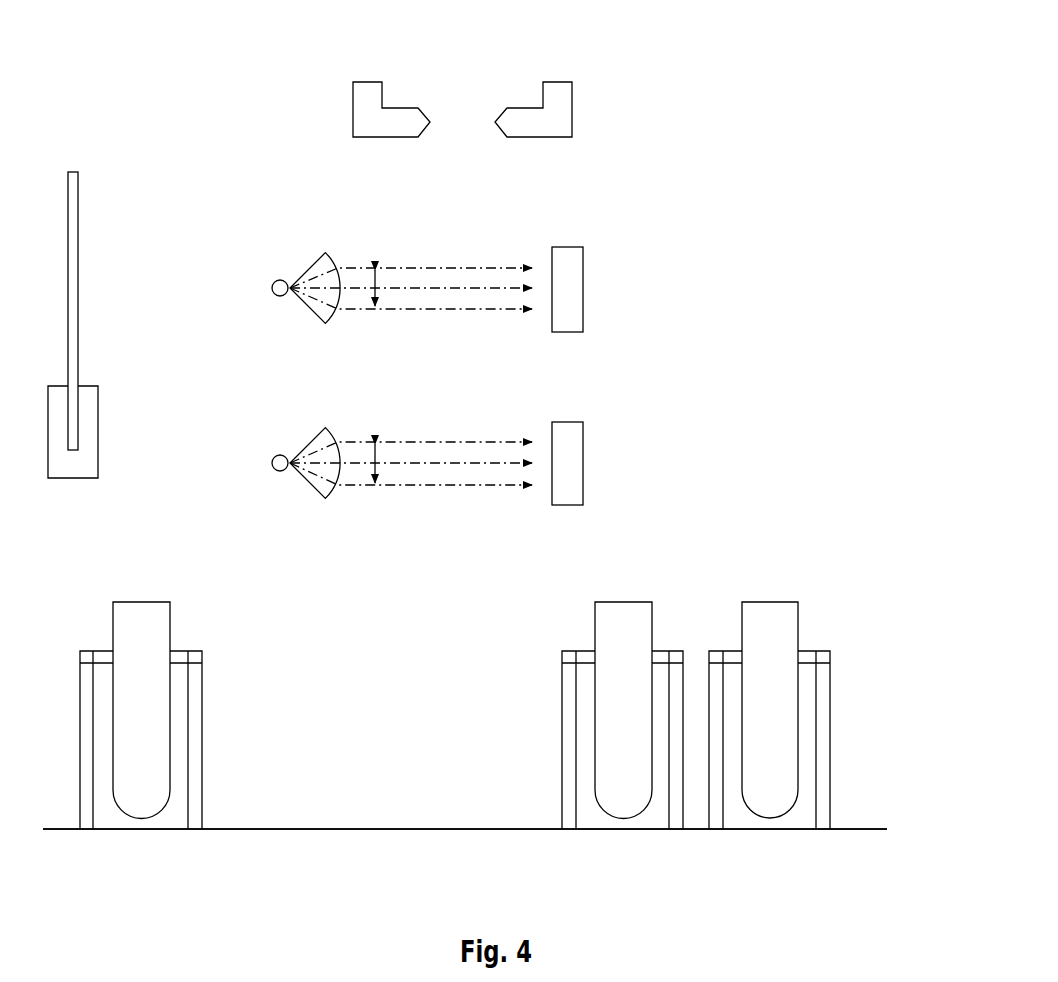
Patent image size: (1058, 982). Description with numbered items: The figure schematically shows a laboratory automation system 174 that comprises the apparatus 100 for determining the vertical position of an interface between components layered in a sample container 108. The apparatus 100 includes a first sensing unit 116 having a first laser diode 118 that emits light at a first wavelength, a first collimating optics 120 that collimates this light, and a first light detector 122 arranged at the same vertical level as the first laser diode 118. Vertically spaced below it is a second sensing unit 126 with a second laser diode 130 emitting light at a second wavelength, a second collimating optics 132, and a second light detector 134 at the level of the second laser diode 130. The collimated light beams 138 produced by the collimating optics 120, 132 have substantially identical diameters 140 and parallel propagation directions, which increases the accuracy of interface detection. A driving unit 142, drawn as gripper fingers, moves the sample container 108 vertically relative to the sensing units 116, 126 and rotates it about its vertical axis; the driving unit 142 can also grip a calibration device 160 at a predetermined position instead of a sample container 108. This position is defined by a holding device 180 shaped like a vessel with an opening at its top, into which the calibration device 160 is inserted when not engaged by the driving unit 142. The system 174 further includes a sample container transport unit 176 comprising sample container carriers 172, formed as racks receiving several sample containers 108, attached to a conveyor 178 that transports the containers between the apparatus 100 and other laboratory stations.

The apparatus 100 is at (671, 162).
The sample container 108 is at (150, 620).
The first sensing unit 116 is at (365, 263).
The first laser diode 118 is at (272, 288).
The first collimating optics 120 is at (308, 267).
The first light detector 122 is at (567, 257).
The second sensing unit 126 is at (365, 437).
The second laser diode 130 is at (272, 463).
The second collimating optics 132 is at (308, 442).
The second light detector 134 is at (567, 432).
The light beams 138 is at (397, 267).
The diameters 140 is at (375, 268).
The driving unit 142 is at (557, 122).
The calibration device 160 is at (78, 322).
The sample container carriers 172 is at (193, 692).
The laboratory automation system 174 is at (818, 156).
The sample container transport unit 176 is at (846, 826).
The conveyor 178 is at (846, 826).
The holding device 180 is at (98, 437).